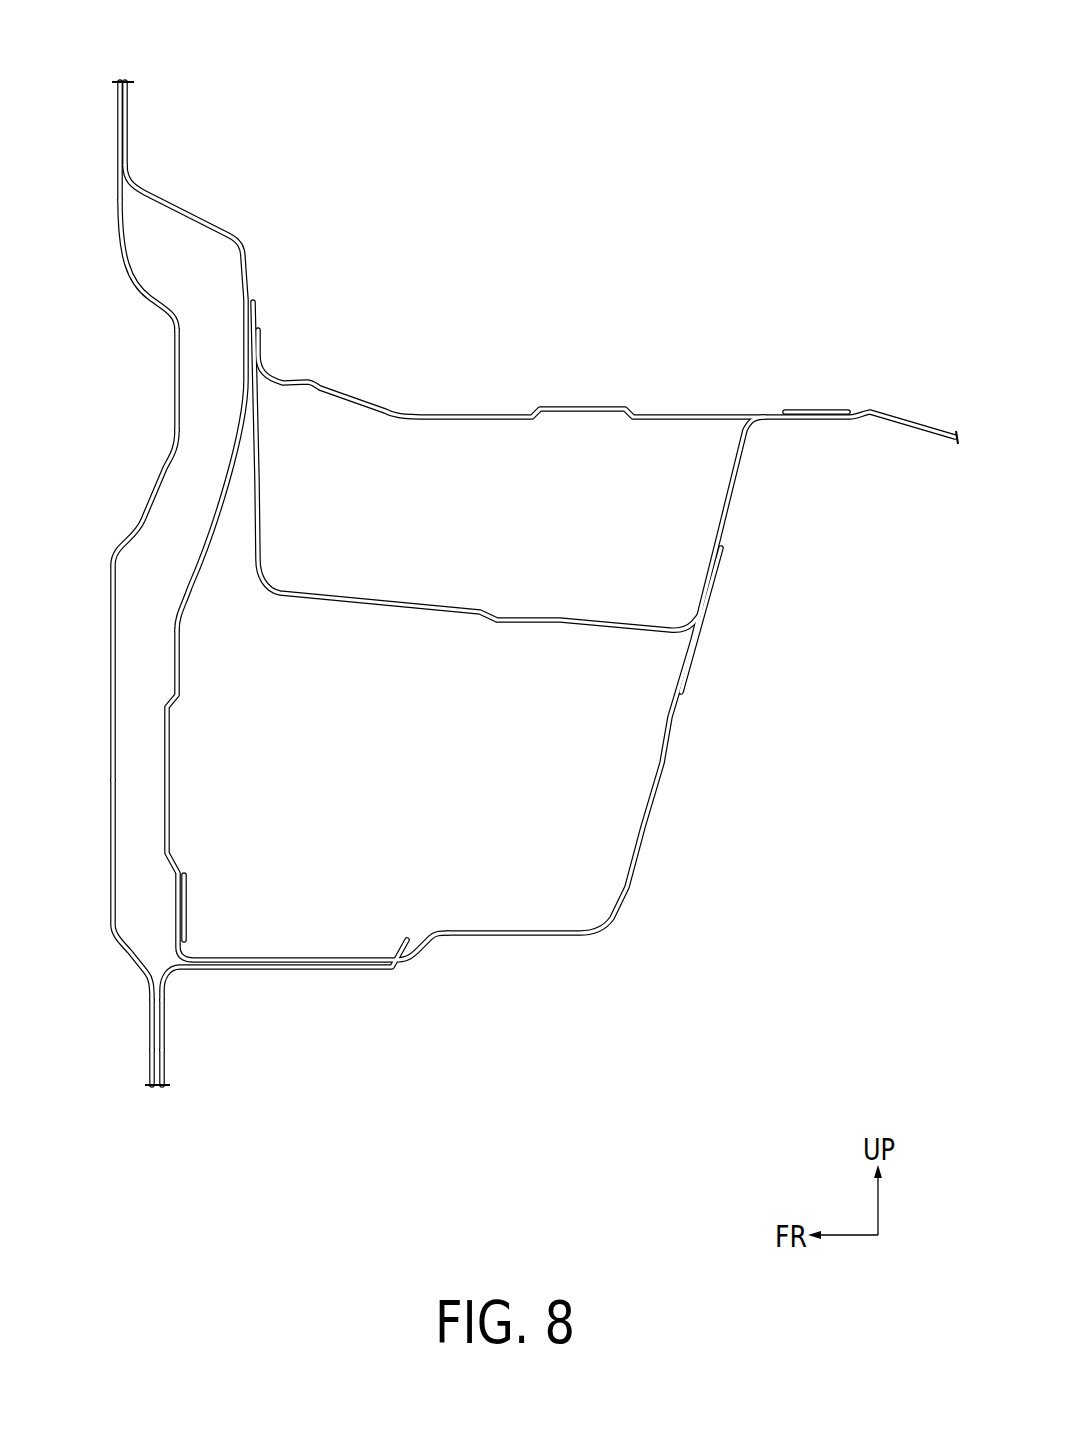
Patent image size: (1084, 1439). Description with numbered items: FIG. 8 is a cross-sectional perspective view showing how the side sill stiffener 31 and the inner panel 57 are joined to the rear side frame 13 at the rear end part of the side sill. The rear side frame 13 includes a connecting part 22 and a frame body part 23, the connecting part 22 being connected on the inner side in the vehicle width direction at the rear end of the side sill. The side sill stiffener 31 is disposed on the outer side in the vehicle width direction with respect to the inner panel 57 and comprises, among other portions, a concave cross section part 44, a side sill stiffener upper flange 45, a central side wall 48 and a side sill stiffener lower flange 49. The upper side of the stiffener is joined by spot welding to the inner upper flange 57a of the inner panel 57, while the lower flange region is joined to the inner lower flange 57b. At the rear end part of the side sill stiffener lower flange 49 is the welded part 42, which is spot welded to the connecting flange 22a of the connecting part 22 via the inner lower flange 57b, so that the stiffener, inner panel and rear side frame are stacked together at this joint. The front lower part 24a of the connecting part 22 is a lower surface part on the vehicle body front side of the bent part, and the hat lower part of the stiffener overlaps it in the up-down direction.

The rear side frame 13 is at (705, 669).
The connecting part 22 is at (646, 832).
The connecting flange 22a is at (168, 1013).
The frame body part 23 is at (731, 490).
The front lower part 24a is at (368, 968).
The side sill stiffener 31 is at (104, 727).
The welded part 42 is at (150, 1047).
The concave cross section part 44 is at (176, 399).
The side sill stiffener upper flange 45 is at (120, 168).
The central side wall 48 is at (112, 812).
The side sill stiffener lower flange 49 is at (153, 1027).
The inner panel 57 is at (238, 225).
The inner upper flange 57a is at (127, 115).
The inner lower flange 57b is at (166, 1066).